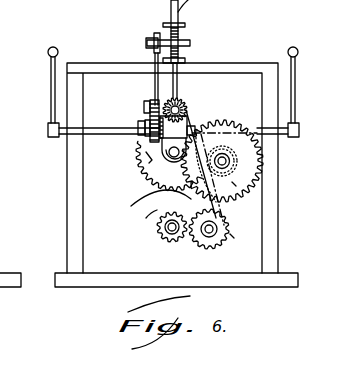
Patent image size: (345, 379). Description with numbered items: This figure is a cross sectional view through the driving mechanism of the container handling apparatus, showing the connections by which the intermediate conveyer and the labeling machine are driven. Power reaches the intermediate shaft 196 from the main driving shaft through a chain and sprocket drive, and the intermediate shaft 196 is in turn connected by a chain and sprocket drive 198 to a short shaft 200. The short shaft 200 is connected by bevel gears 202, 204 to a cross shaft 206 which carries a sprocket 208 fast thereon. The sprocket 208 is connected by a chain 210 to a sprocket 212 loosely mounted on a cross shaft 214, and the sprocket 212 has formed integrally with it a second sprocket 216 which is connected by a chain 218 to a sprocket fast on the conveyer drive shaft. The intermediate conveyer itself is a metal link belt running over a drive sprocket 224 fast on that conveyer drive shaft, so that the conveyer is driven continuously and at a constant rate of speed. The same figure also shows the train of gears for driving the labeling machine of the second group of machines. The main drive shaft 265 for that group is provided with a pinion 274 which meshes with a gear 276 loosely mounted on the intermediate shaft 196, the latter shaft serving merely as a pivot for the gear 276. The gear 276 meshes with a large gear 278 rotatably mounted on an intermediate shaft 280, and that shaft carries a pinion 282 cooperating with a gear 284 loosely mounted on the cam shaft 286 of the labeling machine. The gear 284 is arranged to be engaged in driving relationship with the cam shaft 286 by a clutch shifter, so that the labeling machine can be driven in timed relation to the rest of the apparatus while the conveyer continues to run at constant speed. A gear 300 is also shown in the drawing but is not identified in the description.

The intermediate shaft 196 is at (210, 233).
The chain and sprocket drive 198 is at (146, 218).
The short shaft 200 is at (180, 107).
The bevel gear 202 is at (188, 118).
The bevel gear 204 is at (171, 102).
The cross shaft 206 is at (145, 110).
The sprocket 208 is at (147, 100).
The chain 210 is at (147, 113).
The sprocket 212 is at (139, 143).
The cross shaft 214 is at (74, 136).
The second sprocket 216 is at (148, 159).
The chain 218 is at (156, 61).
The drive sprocket 224 is at (179, 34).
The drive shaft 265 is at (162, 229).
The pinion 274 is at (174, 243).
The gear 276 is at (233, 236).
The large gear 278 is at (234, 184).
The intermediate shaft 280 is at (229, 163).
The pinion 282 is at (247, 190).
The gear 284 is at (165, 181).
The cam shaft 286 is at (155, 177).
The gear 300 is at (199, 121).